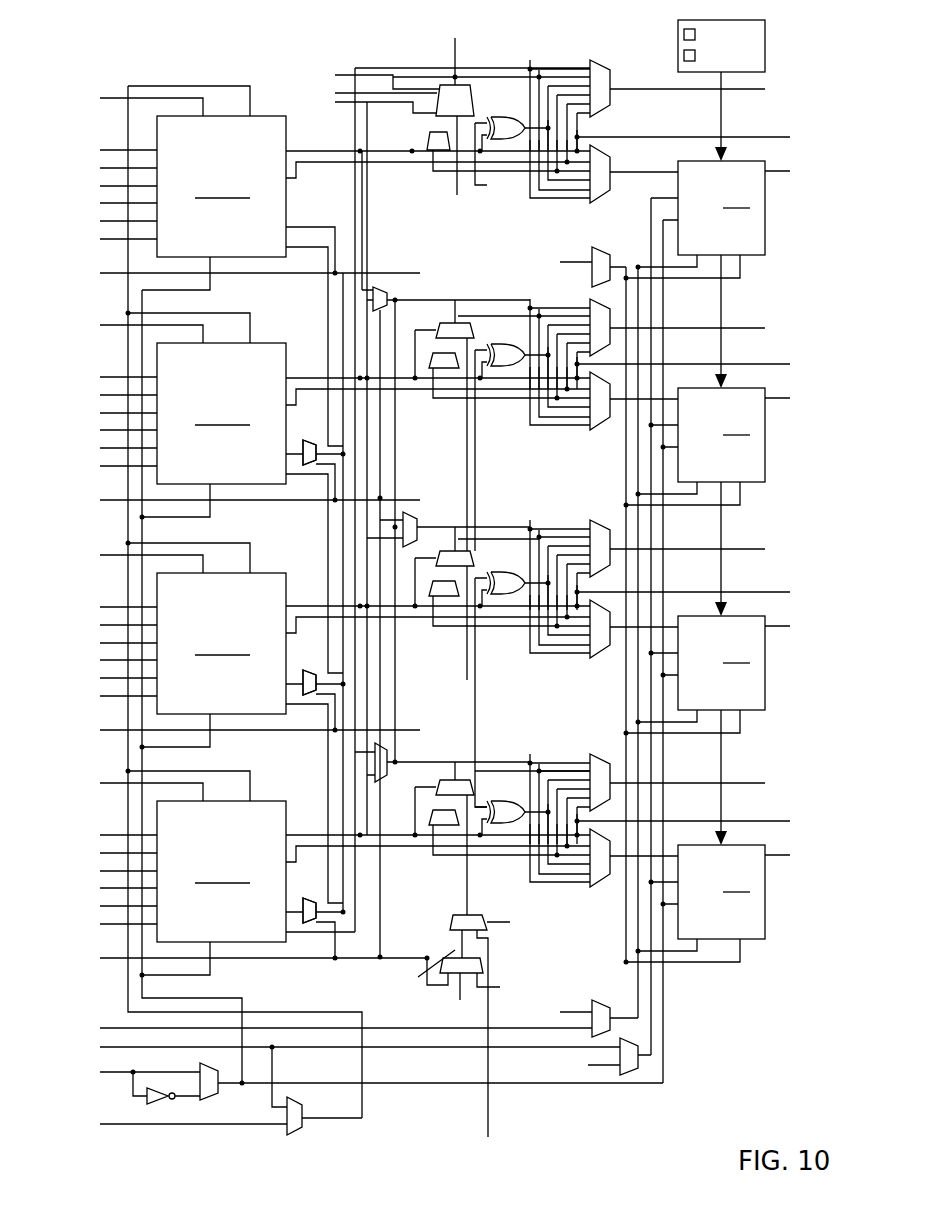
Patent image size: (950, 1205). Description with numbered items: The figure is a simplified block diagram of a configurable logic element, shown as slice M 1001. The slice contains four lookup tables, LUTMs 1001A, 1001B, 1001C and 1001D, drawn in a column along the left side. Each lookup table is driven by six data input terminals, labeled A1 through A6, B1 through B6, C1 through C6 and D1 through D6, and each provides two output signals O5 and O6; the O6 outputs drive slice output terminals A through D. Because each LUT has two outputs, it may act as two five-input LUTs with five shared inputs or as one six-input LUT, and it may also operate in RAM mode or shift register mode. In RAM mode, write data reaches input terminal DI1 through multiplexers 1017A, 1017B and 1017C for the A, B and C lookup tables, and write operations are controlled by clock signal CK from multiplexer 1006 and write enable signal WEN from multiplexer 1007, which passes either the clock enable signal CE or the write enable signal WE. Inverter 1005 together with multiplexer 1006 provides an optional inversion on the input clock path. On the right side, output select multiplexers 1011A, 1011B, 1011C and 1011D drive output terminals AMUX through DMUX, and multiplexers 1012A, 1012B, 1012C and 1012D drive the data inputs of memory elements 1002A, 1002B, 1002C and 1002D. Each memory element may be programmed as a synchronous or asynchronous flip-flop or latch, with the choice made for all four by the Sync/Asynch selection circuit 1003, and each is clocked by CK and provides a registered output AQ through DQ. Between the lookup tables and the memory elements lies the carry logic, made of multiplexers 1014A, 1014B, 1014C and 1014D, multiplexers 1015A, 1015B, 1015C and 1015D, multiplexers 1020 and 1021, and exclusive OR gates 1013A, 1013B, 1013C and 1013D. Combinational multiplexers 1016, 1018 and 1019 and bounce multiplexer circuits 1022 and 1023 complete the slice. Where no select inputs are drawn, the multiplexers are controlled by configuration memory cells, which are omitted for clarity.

The slice M 1001 is at (190, 66).
The lookup table (LUTM) 1001D is at (252, 225).
The lookup table (LUTM) 1001C is at (242, 492).
The lookup table (LUTM) 1001B is at (242, 722).
The lookup table (LUTM) 1001A is at (256, 877).
The memory element 1002D is at (765, 231).
The memory element 1002C is at (707, 448).
The memory element 1002B is at (707, 676).
The memory element 1002A is at (707, 905).
The Sync/Asynch selection circuit 1003 is at (677, 61).
The inverter 1005 is at (157, 1104).
The multiplexer 1006 is at (215, 1097).
The multiplexer 1007 is at (292, 1136).
The output select multiplexer 1011D is at (611, 100).
The output select multiplexer 1011C is at (570, 315).
The output select multiplexer 1011B is at (569, 538).
The output select multiplexer 1011A is at (570, 770).
The multiplexer 1012D is at (610, 162).
The multiplexer 1012C is at (570, 411).
The multiplexer 1012B is at (569, 640).
The multiplexer 1012A is at (569, 869).
The exclusive OR gate 1013D is at (505, 117).
The exclusive OR gate 1013C is at (507, 339).
The exclusive OR gate 1013B is at (507, 567).
The exclusive OR gate 1013A is at (507, 798).
The multiplexer 1014D is at (472, 87).
The multiplexer 1014C is at (447, 309).
The multiplexer 1014B is at (444, 533).
The multiplexer 1014A is at (439, 768).
The multiplexer 1015D is at (431, 150).
The multiplexer 1015C is at (481, 392).
The multiplexer 1015B is at (482, 620).
The multiplexer 1015A is at (479, 848).
The combinational multiplexer 1016 is at (385, 290).
The multiplexer 1017C is at (278, 485).
The multiplexer 1017B is at (278, 715).
The multiplexer 1017A is at (278, 943).
The combinational multiplexer 1018 is at (403, 528).
The combinational multiplexer 1019 is at (381, 783).
The multiplexer 1020 is at (483, 958).
The multiplexer 1021 is at (604, 239).
The bounce multiplexer circuit 1022 is at (596, 1000).
The bounce multiplexer circuit 1023 is at (628, 1076).